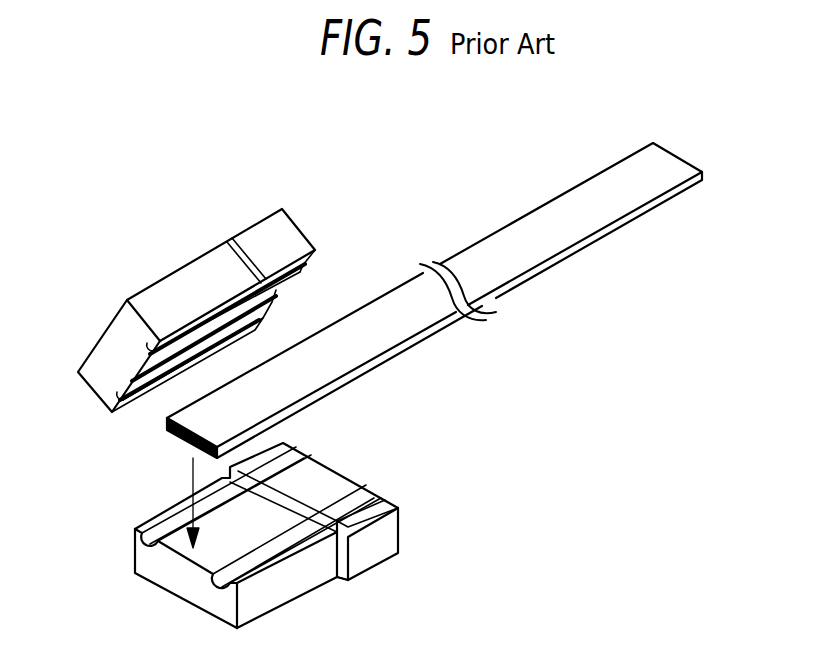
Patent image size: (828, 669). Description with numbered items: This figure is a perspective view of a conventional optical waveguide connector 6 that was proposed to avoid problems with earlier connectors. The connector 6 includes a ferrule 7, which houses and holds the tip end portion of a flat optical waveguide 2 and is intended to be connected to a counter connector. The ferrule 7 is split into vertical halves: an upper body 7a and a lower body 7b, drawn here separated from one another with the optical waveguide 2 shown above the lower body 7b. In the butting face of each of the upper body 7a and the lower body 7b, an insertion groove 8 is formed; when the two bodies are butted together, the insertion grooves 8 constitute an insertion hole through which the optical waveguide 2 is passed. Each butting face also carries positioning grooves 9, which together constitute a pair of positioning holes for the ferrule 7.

The optical waveguide 2 is at (472, 263).
The optical waveguide connector 6 is at (376, 568).
The ferrule 7 is at (50, 431).
The upper body 7a is at (251, 350).
The lower body 7b is at (228, 468).
The insertion groove 8 is at (148, 366).
The positioning grooves 9 is at (300, 277).